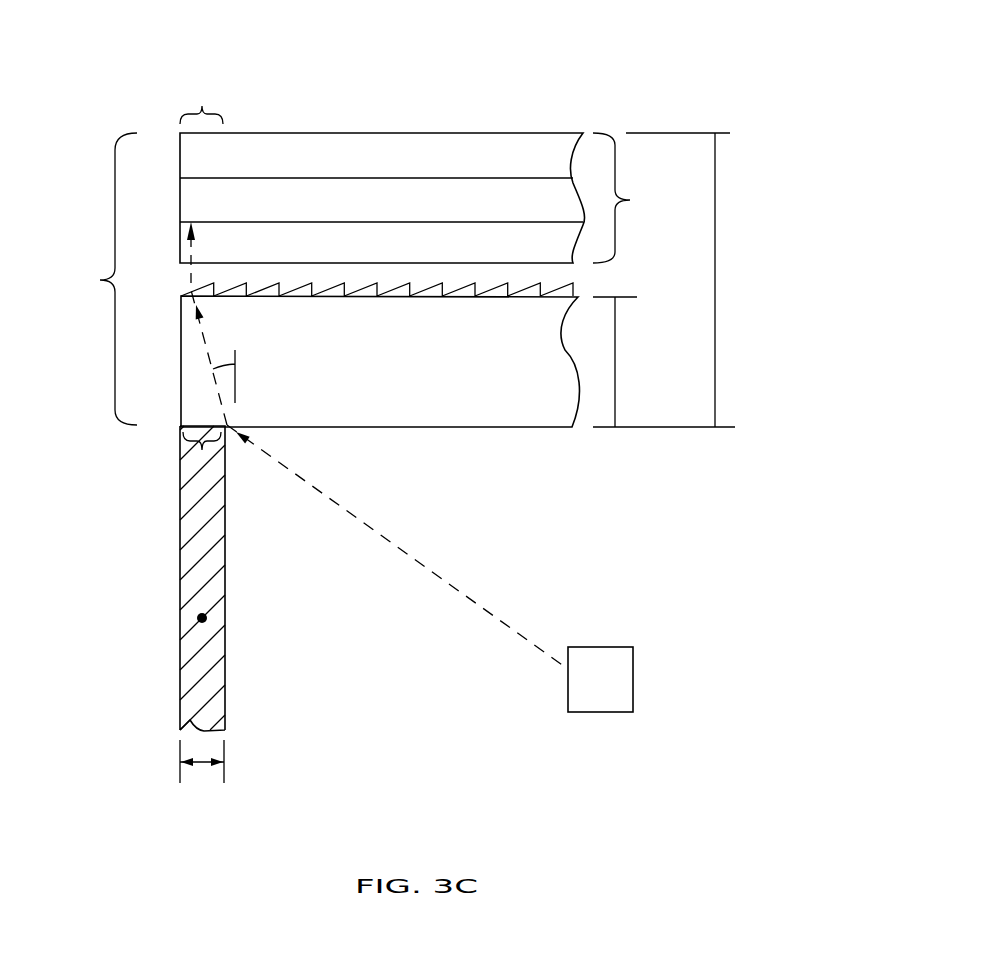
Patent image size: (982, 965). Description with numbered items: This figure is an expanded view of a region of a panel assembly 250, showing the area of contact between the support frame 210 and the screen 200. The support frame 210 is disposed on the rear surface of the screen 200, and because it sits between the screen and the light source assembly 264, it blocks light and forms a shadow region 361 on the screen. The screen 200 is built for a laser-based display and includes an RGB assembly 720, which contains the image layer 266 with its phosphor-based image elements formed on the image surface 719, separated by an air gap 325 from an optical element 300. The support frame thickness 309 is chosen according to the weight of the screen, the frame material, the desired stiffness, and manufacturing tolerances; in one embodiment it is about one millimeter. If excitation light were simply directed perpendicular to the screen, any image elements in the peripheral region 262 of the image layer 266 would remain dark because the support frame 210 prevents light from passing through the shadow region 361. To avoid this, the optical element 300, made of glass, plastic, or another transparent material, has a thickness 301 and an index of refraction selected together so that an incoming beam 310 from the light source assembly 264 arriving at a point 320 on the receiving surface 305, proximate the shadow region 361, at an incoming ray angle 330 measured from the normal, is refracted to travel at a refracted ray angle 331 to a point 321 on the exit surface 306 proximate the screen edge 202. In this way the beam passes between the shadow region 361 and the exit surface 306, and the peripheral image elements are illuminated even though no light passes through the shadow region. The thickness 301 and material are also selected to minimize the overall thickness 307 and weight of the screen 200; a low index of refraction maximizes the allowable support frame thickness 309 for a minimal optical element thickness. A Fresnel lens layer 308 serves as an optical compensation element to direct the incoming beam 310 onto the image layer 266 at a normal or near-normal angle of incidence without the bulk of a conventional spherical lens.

The screen 200 is at (100, 280).
The screen edge 202 is at (180, 460).
The support frame 210 is at (197, 618).
The panel assembly 250 is at (206, 48).
The peripheral region 262 is at (202, 106).
The light source assembly 264 is at (618, 690).
The image layer 266 is at (369, 213).
The optical element 300 is at (488, 380).
The thickness 301 is at (615, 350).
The receiving surface 305 is at (462, 428).
The exit surface 306 is at (440, 298).
The thickness 307 is at (715, 190).
The Fresnel lens layer 308 is at (558, 290).
The support frame thickness 309 is at (203, 765).
The incoming beam 310 is at (452, 586).
The point 320 is at (235, 418).
The point 321 is at (212, 301).
The air gap 325 is at (182, 283).
The incoming ray angle 330 is at (224, 490).
The refracted ray angle 331 is at (222, 360).
The shadow region 361 is at (201, 452).
The image surface 719 is at (592, 188).
The RGB assembly 720 is at (630, 200).